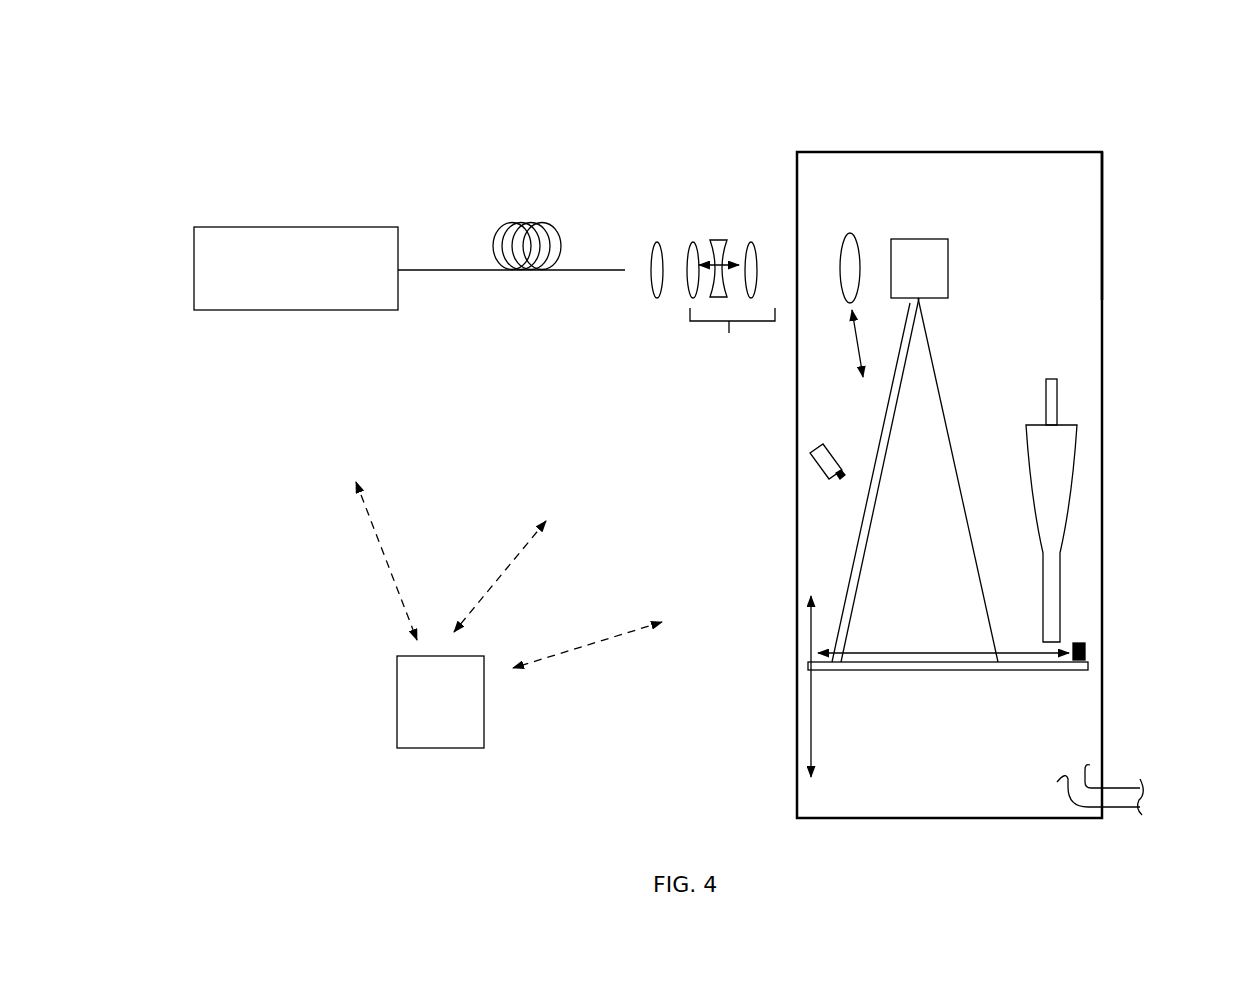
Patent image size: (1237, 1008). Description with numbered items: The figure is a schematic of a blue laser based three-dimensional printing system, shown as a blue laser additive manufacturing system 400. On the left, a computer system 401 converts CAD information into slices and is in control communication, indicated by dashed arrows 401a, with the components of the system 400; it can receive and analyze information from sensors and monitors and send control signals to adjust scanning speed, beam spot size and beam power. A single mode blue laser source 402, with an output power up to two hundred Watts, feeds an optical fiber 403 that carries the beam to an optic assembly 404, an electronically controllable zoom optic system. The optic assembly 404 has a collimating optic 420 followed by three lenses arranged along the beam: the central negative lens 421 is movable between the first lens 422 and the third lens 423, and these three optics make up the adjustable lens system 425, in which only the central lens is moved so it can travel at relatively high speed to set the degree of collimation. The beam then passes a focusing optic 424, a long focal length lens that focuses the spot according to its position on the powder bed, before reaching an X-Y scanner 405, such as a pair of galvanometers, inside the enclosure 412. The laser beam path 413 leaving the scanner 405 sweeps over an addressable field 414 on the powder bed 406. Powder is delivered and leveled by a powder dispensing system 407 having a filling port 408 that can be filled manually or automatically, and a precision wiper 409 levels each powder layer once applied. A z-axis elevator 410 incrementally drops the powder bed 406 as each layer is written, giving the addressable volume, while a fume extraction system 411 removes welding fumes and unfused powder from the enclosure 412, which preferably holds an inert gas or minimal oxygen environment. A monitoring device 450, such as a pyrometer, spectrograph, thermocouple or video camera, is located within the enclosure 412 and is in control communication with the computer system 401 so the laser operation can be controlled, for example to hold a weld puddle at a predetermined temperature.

The blue laser additive manufacturing system 400 is at (717, 100).
The computer system 401 is at (461, 717).
The dashed arrows 401a is at (380, 553).
The single mode blue laser source 402 is at (303, 227).
The optical fiber 403 is at (527, 222).
The optic assembly 404 is at (810, 140).
The X-Y scanner 405 is at (918, 239).
The powder bed 406 is at (1041, 672).
The powder dispensing system 407 is at (1068, 553).
The filling port 408 is at (1063, 395).
The precision wiper 409 is at (1093, 648).
The z-axis elevator 410 is at (808, 677).
The fume extraction system 411 is at (1118, 808).
The enclosure 412 is at (1103, 198).
The laser beam path 413 is at (932, 347).
The addressable field 414 is at (1003, 640).
The collimating optic 420 is at (657, 242).
The central negative lens 421 is at (718, 240).
The first lens 422 is at (693, 242).
The third lens 423 is at (751, 242).
The focusing optic 424 is at (851, 233).
The adjustable lens system 425 is at (657, 330).
The monitoring device 450 is at (822, 460).